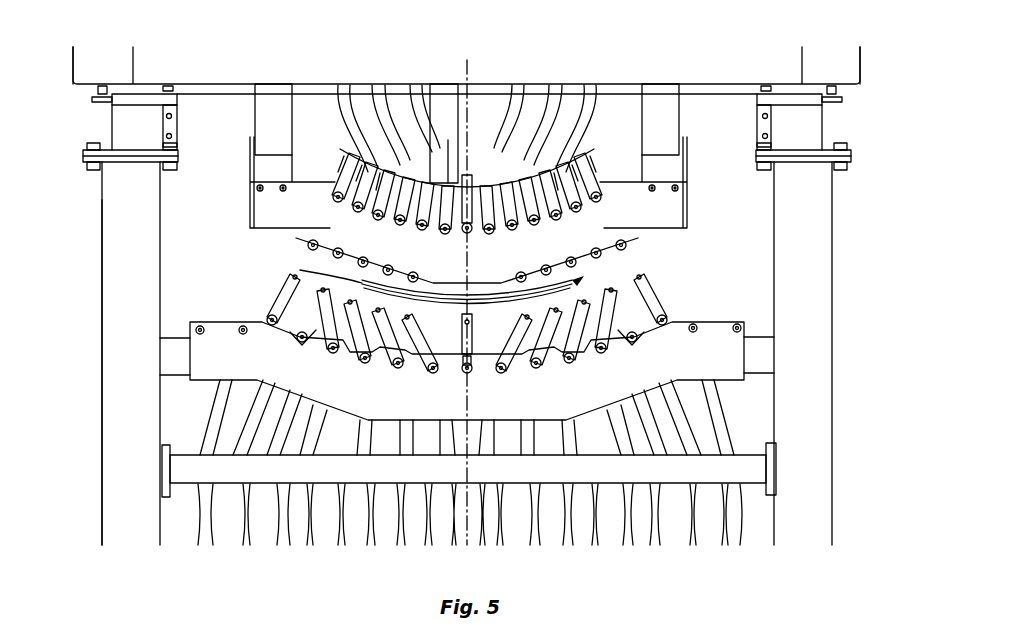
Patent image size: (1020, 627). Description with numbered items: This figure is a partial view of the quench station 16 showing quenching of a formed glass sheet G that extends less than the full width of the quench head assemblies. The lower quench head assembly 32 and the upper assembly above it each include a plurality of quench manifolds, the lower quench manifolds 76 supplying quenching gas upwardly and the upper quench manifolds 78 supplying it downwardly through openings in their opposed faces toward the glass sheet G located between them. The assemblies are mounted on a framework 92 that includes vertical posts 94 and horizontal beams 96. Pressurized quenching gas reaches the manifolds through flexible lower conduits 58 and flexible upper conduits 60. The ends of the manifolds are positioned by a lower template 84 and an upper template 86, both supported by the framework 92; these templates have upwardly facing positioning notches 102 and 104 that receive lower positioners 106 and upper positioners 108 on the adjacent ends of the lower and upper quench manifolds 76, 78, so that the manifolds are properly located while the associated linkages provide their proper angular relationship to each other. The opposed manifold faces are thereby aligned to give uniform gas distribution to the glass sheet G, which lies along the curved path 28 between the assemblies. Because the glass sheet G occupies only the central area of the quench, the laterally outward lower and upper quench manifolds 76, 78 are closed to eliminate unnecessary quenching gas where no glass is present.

The harvesting header / topping apparatus 16 is at (743, 67).
The guide arc / gap band 28 is at (598, 272).
The lower quench head assembly 32 is at (296, 240).
The flexible lower conduit 58 is at (300, 447).
The flexible upper conduit 60 is at (353, 83).
The lower quench manifold 76 is at (278, 312).
The upper quench manifold 78 is at (368, 178).
The lower template 84 is at (740, 362).
The upper template 86 is at (293, 207).
The framework 92 is at (103, 237).
The vertical post 94 is at (118, 318).
The horizontal beam 96 is at (188, 75).
The positioning notch 102 is at (425, 360).
The positioning notch 104 is at (396, 223).
The lower positioner 106 is at (470, 375).
The upper positioner 108 is at (403, 228).
The glass sheet G is at (362, 282).